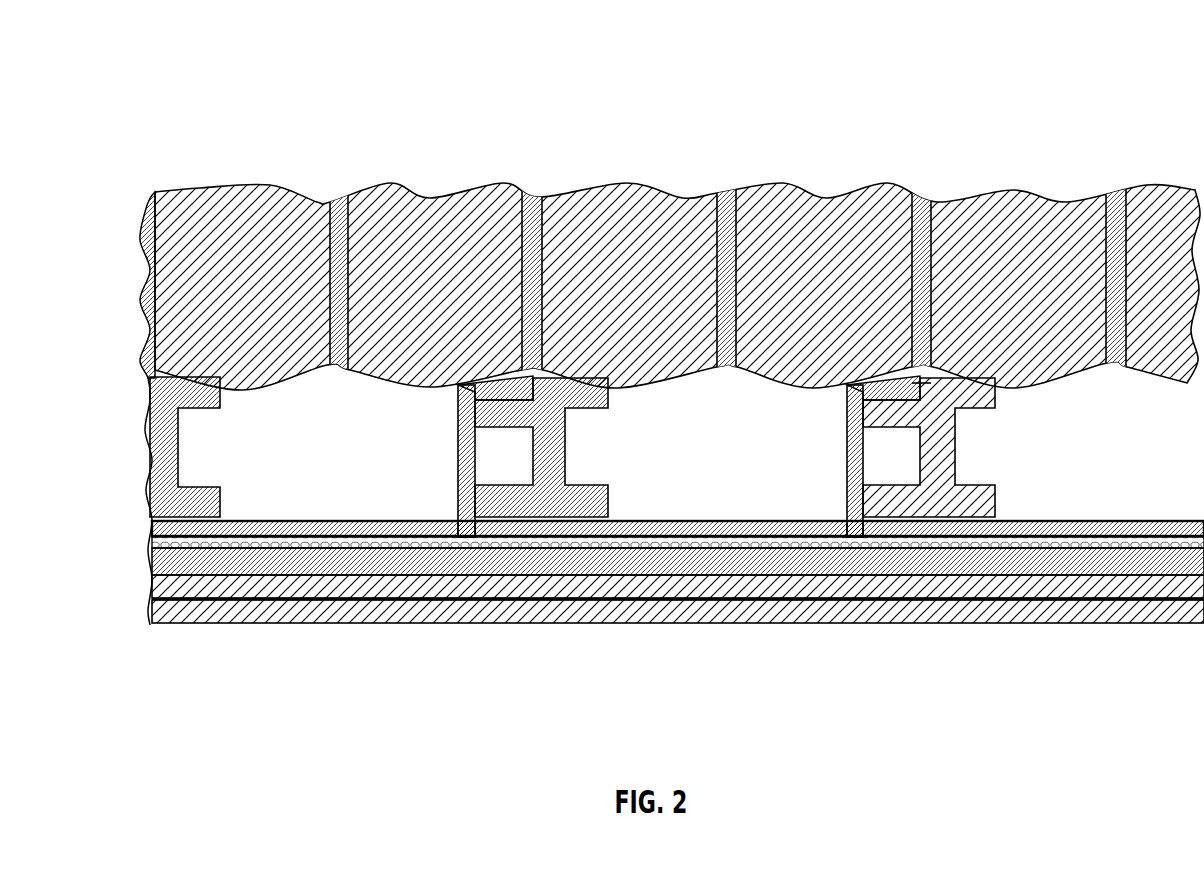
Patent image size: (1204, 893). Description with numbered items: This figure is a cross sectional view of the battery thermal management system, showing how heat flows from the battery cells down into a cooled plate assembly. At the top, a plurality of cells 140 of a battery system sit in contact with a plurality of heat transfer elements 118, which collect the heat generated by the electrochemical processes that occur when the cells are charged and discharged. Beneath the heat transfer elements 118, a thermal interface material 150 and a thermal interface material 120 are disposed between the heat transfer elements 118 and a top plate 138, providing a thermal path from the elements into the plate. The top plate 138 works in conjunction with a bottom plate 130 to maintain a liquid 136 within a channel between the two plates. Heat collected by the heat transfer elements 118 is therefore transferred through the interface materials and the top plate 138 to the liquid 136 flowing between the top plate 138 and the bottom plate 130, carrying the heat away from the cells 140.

The heat transfer elements 118 is at (533, 193).
The thermal interface material 120 is at (152, 522).
The bottom plate 130 is at (152, 588).
The liquid 136 is at (152, 623).
The top plate 138 is at (152, 560).
The cells 140 is at (782, 182).
The thermal interface material 150 is at (152, 546).